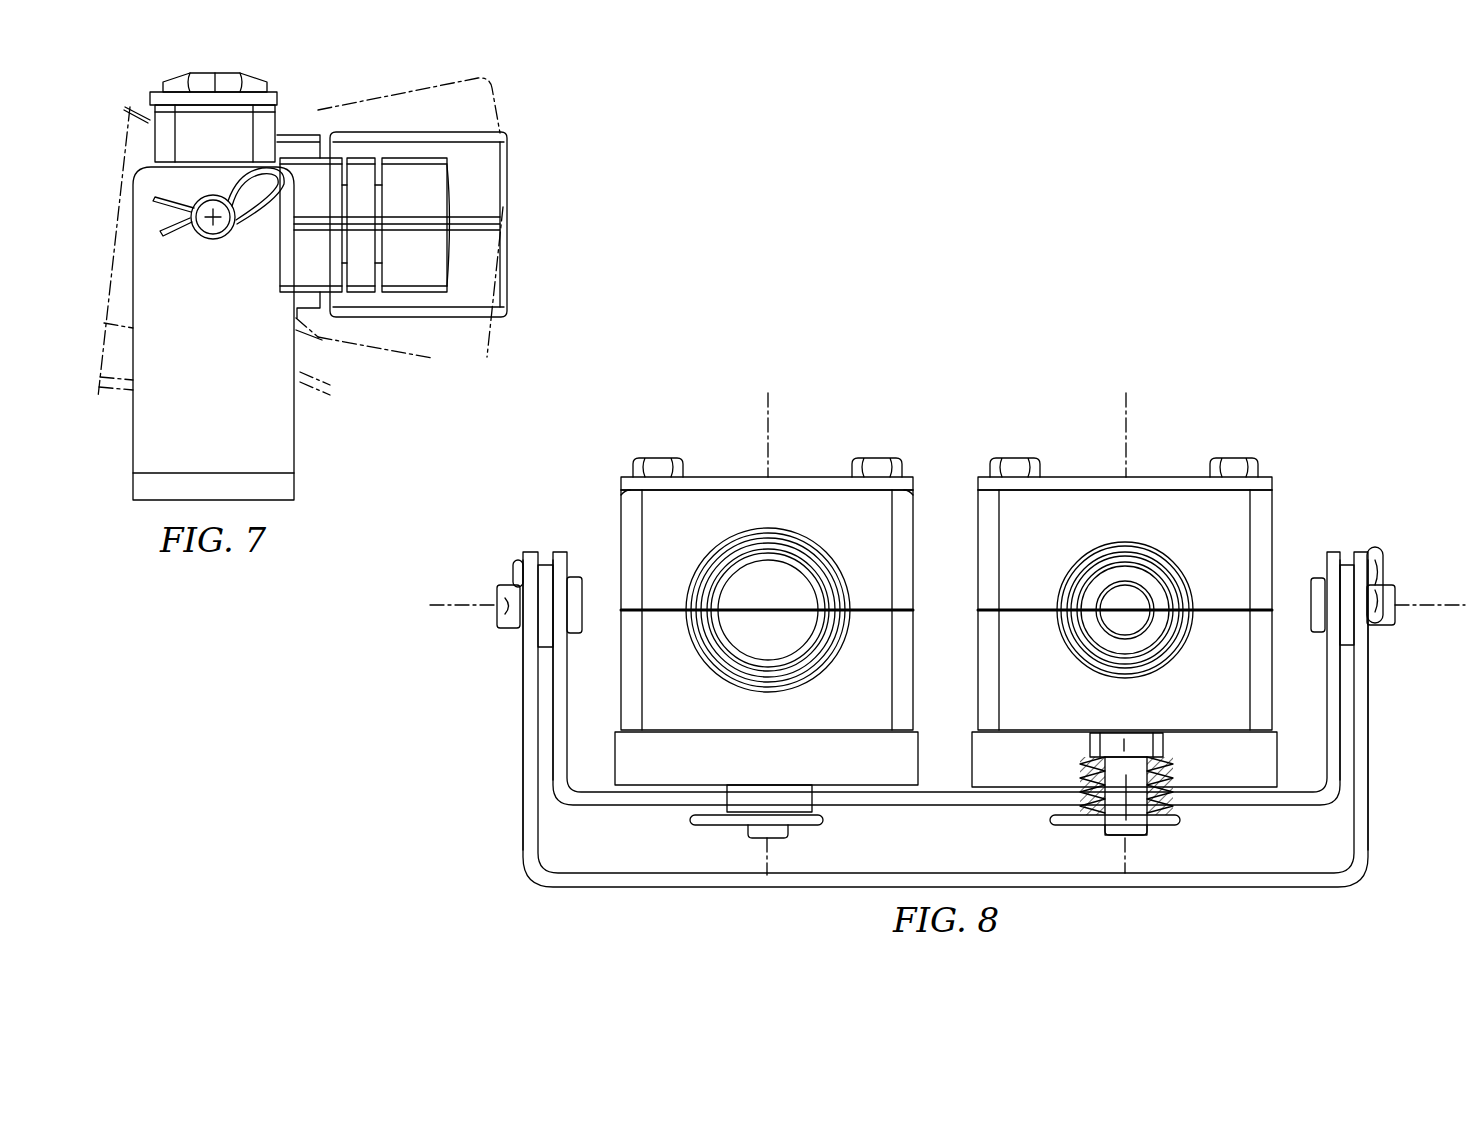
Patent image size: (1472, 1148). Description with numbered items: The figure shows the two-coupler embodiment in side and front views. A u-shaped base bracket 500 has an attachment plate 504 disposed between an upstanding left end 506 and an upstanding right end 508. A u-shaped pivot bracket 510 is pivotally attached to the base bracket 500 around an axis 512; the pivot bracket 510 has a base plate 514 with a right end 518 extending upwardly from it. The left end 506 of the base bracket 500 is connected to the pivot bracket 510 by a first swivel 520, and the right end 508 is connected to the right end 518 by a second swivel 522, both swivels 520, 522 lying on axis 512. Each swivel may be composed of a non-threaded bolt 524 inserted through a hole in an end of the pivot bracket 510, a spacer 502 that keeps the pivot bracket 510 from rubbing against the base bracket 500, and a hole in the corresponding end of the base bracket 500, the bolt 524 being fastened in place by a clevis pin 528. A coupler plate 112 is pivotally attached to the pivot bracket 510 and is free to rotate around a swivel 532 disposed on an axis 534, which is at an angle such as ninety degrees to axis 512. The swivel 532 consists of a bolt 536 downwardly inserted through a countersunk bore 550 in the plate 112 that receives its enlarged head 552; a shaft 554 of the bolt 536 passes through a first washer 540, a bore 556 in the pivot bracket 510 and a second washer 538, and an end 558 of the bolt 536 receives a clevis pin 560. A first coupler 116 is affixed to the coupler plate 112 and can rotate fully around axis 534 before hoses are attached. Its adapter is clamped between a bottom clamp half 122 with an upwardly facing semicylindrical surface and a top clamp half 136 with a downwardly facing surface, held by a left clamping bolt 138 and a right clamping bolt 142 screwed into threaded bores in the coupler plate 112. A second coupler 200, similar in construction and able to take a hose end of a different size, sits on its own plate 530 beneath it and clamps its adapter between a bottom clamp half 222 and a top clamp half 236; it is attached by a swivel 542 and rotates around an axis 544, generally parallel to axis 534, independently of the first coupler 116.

In FIG. 7, the coupler plate 112 is at (300, 349).
In FIG. 8, the coupler plate 112 is at (1252, 771).
In FIG. 8, the first coupler 116 is at (1096, 477).
In FIG. 8, the bottom clamp half 122 is at (1052, 709).
In FIG. 8, the top clamp half 136 is at (1052, 536).
In FIG. 8, the left clamping bolt 138 is at (656, 458).
In FIG. 8, the right clamping bolt 142 is at (880, 458).
In FIG. 8, the second coupler 200 is at (736, 477).
In FIG. 8, the bottom clamp half 222 is at (691, 704).
In FIG. 8, the top clamp half 236 is at (691, 536).
In FIG. 8, the base bracket 500 is at (671, 890).
In FIG. 8, the spacer 502 is at (545, 565).
In FIG. 8, the attachment plate 504 is at (1220, 888).
In FIG. 8, the left end 506 is at (528, 697).
In FIG. 7, the right end 508 is at (234, 426).
In FIG. 8, the right end 508 is at (1362, 697).
In FIG. 8, the pivot bracket 510 is at (558, 750).
In FIG. 7, the axis 512 is at (213, 232).
In FIG. 8, the axis 512 is at (463, 607).
In FIG. 8, the base plate 514 is at (938, 805).
In FIG. 7, the right end 518 is at (325, 352).
In FIG. 8, the right end 518 is at (1333, 750).
In FIG. 8, the first swivel 520 is at (516, 522).
In FIG. 8, the second swivel 522 is at (1375, 522).
In FIG. 8, the non-threaded bolt 524 is at (578, 634).
In FIG. 8, the clevis pin 528 is at (512, 572).
In FIG. 8, the base plate 530 is at (854, 771).
In FIG. 8, the swivel 532 is at (1135, 893).
In FIG. 8, the axis 534 is at (1129, 400).
In FIG. 8, the swivel bolt 536 is at (790, 830).
In FIG. 8, the second washer 538 is at (723, 820).
In FIG. 8, the first washer 540 is at (726, 790).
In FIG. 8, the swivel 542 is at (761, 893).
In FIG. 8, the axis 544 is at (771, 400).
In FIG. 8, the bore 550 is at (1126, 757).
In FIG. 8, the enlarged head 552 is at (1090, 740).
In FIG. 8, the shaft 554 is at (1095, 775).
In FIG. 8, the bore 556 is at (1106, 830).
In FIG. 8, the end 558 is at (1124, 868).
In FIG. 8, the clevis pin 560 is at (1050, 820).